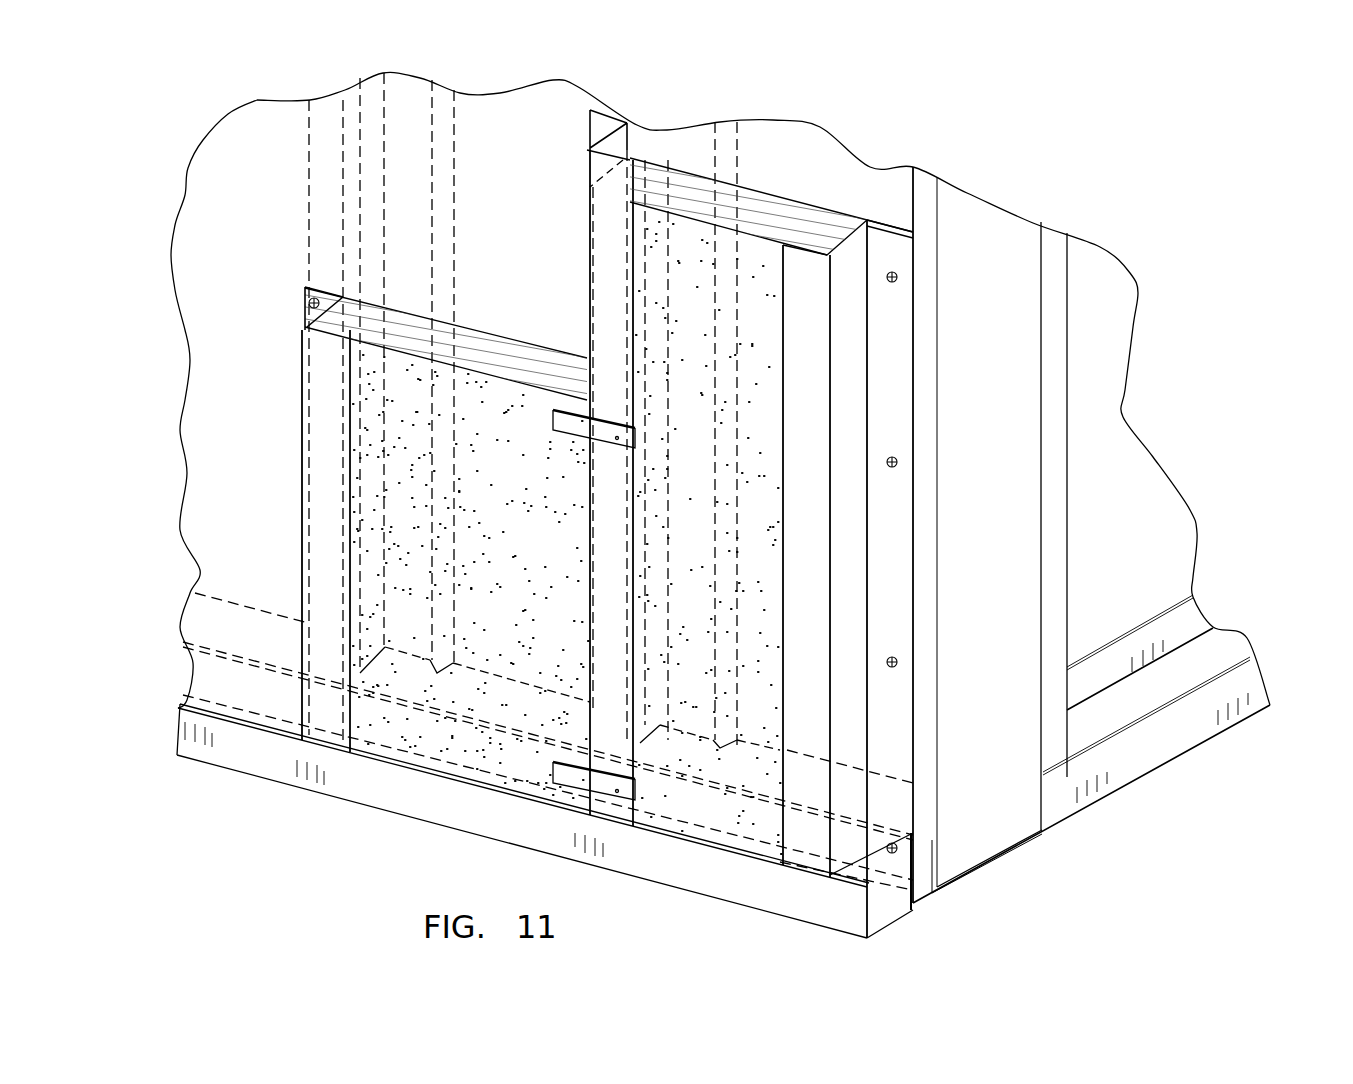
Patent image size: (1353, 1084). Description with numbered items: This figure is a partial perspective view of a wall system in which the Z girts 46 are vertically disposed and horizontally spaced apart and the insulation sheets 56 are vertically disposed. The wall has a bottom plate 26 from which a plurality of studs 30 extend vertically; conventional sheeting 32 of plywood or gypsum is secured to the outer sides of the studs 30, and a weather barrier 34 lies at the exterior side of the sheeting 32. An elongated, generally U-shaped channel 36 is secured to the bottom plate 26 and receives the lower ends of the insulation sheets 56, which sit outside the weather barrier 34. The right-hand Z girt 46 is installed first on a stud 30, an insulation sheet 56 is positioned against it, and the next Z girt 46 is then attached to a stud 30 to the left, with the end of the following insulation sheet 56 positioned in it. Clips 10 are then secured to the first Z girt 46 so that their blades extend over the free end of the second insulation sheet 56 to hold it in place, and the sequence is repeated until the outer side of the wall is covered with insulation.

The clip 10 is at (552, 433).
The bottom plate 26 is at (1142, 767).
The stud 30 is at (1002, 453).
The sheeting 32 is at (932, 198).
The weather barrier 34 is at (915, 260).
The channel 36 is at (780, 917).
The Z girt 46 is at (302, 313).
The insulation sheet 56 is at (784, 210).